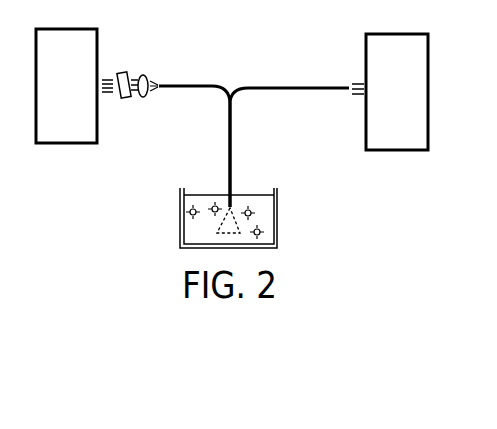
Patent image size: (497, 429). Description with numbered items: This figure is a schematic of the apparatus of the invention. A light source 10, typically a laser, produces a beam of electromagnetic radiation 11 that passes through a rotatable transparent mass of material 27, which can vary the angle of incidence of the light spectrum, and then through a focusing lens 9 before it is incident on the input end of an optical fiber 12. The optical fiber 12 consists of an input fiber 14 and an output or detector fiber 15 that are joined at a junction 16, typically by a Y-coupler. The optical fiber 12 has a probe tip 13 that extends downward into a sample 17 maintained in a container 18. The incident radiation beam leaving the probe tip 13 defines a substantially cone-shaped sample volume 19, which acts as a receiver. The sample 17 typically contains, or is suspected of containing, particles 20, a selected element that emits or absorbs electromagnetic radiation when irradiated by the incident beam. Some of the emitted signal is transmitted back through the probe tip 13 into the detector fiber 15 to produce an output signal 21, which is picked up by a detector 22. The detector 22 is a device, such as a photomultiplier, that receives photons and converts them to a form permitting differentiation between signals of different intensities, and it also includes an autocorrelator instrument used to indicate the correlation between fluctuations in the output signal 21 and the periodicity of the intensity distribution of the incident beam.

The focusing lens 9 is at (147, 75).
The light source 10 is at (74, 84).
The beam of electromagnetic radiation 11 is at (107, 78).
The optical fiber 12 is at (211, 116).
The probe tip 13 is at (234, 206).
The input fiber 14 is at (172, 89).
The output or detector fiber 15 is at (308, 90).
The junction 16 is at (240, 110).
The sample 17 is at (266, 216).
The container 18 is at (278, 203).
The sample volume 19 is at (217, 223).
The particles 20 is at (190, 212).
The output signal 21 is at (357, 80).
The detector 22 is at (409, 87).
The rotatable transparent mass of material 27 is at (123, 72).